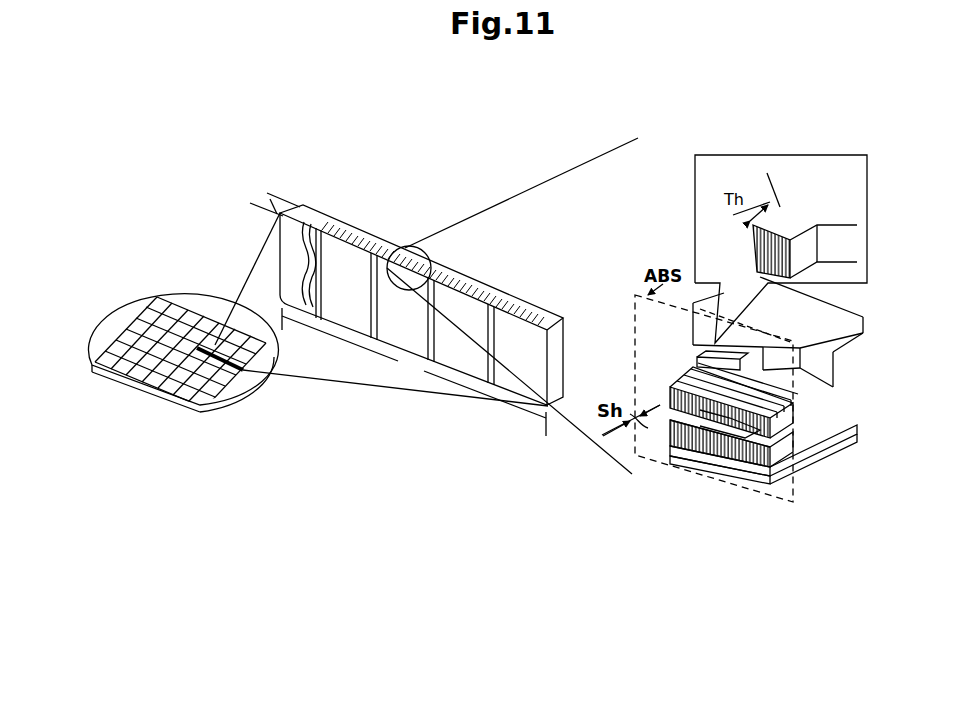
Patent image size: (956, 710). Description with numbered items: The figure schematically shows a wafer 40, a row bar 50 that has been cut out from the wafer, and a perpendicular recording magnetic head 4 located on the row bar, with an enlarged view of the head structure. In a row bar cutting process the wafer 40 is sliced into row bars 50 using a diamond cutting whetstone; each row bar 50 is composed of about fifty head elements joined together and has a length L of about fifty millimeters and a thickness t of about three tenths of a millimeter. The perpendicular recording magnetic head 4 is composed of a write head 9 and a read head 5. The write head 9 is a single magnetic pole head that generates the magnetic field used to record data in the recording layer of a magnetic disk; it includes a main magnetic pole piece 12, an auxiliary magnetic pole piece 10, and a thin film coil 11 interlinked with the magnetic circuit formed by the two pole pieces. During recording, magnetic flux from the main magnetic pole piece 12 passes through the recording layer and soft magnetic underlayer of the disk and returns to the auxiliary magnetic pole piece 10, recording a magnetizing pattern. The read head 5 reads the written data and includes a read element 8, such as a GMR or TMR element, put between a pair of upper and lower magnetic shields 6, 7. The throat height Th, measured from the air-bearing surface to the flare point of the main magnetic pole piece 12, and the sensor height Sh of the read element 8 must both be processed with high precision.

The perpendicular recording magnetic head 4 is at (633, 292).
The read head 5 is at (782, 455).
The upper magnetic shield 6 is at (798, 460).
The lower magnetic shield 7 is at (808, 433).
The read element 8 is at (690, 455).
The write head 9 is at (870, 316).
The auxiliary magnetic pole piece 10 is at (672, 396).
The thin film coil 11 is at (680, 376).
The main magnetic pole piece 12 is at (698, 360).
The wafer 40 is at (175, 402).
The row bar 50 is at (517, 295).